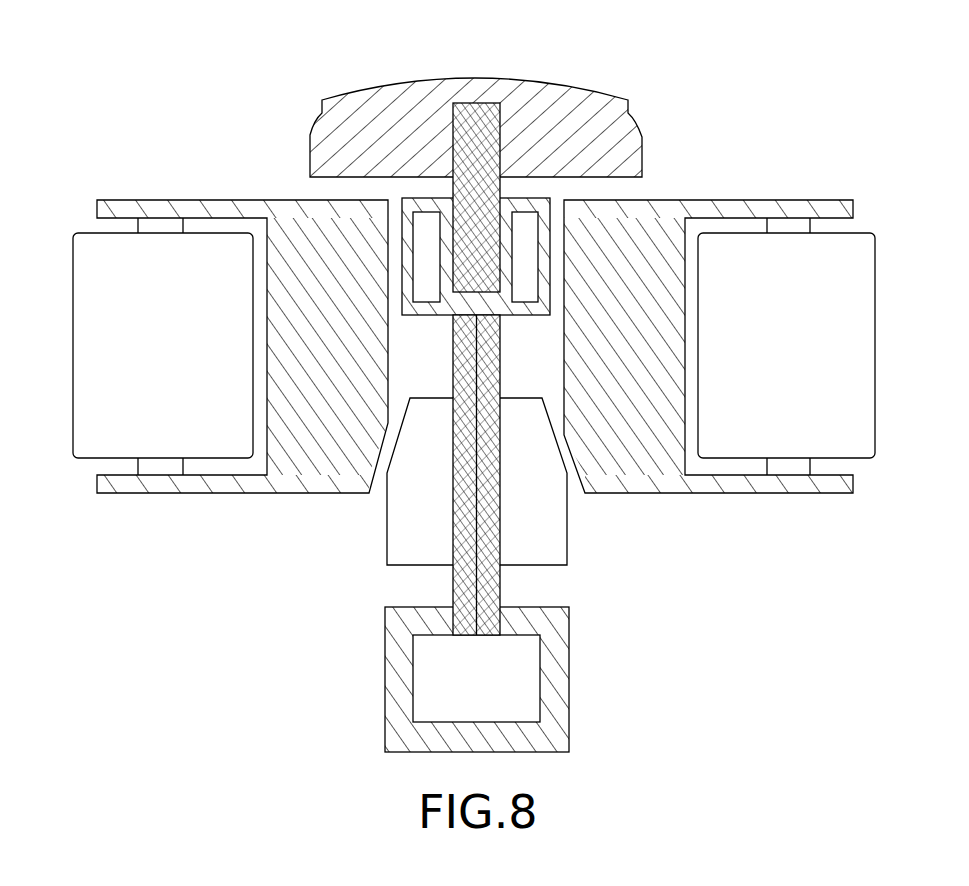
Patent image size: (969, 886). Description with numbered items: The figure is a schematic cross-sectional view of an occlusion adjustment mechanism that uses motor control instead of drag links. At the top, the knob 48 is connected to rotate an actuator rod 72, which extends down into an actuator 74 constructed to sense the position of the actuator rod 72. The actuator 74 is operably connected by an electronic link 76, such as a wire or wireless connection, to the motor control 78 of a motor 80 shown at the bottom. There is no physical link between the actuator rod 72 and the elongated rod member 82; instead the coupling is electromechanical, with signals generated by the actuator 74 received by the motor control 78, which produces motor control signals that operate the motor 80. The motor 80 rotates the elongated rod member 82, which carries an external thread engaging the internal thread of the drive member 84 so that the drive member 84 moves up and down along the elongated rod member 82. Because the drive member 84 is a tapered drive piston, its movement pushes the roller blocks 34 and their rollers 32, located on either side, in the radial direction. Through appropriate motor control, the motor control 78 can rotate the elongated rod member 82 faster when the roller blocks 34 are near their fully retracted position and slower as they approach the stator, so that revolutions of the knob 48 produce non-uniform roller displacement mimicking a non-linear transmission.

The roller 32 is at (123, 278).
The roller block 34 is at (292, 463).
The knob 48 is at (588, 112).
The actuator rod 72 is at (478, 112).
The actuator 74 is at (413, 257).
The electronic link 76 is at (488, 573).
The motor control 78 is at (510, 668).
The motor 80 is at (383, 658).
The elongated rod member 82 is at (453, 576).
The drive member 84 is at (400, 476).